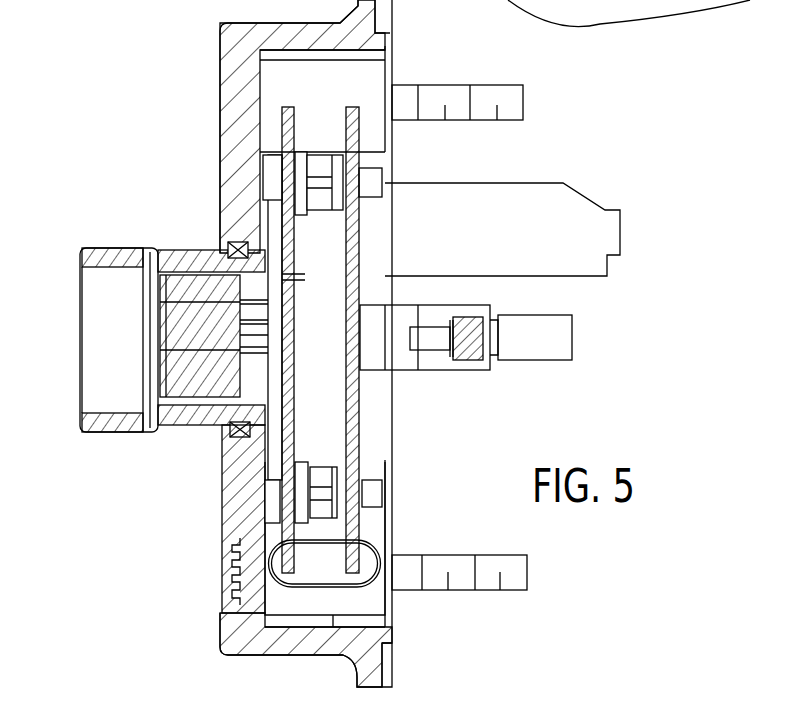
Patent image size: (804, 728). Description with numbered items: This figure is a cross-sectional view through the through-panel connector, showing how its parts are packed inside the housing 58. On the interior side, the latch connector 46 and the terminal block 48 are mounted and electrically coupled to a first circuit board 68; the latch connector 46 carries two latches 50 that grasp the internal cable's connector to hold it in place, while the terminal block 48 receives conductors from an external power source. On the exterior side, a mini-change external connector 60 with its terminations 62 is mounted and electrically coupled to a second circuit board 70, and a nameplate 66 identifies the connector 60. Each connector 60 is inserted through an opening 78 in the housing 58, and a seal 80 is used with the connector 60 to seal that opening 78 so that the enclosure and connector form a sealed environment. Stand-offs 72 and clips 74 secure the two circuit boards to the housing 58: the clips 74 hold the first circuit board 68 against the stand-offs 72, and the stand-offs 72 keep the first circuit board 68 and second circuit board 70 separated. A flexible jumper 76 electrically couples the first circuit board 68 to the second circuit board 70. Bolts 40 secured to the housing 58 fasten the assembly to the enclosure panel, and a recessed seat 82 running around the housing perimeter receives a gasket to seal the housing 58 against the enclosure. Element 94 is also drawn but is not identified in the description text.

The bolts 40 is at (523, 104).
The latch connector 46 is at (457, 370).
The terminal block 48 is at (515, 180).
The latches 50 is at (565, 338).
The housing 58 is at (233, 33).
The external connector 60 is at (97, 248).
The terminations 62 is at (160, 353).
The nameplate 66 is at (223, 572).
The first circuit board 68 is at (357, 440).
The second circuit board 70 is at (283, 130).
The stand-offs 72 is at (325, 167).
The clips 74 is at (373, 192).
The flexible jumper 76 is at (322, 588).
The opening 78 is at (222, 425).
The seal 80 is at (228, 242).
The recessed seat 82 is at (388, 15).
The terminal 94 is at (382, 494).